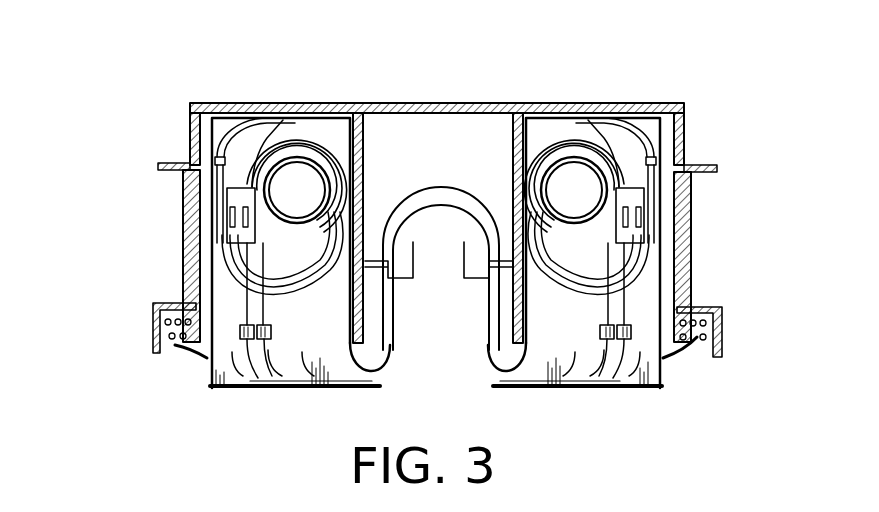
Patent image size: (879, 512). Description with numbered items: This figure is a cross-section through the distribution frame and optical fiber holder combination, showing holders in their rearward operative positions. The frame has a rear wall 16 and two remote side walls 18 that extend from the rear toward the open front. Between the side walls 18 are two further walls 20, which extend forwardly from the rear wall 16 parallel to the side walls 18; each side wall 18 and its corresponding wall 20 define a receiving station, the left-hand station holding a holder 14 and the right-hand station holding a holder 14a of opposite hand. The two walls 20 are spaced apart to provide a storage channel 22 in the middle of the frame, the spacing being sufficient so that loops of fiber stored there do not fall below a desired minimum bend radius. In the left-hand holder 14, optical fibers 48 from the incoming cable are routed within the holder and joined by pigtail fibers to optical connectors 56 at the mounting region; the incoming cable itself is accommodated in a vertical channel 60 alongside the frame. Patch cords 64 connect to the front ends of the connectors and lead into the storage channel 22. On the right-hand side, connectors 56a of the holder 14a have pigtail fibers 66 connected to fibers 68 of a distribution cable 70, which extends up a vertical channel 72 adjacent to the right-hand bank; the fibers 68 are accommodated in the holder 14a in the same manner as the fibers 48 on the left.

The holder 14 is at (322, 390).
The holder 14a is at (515, 395).
The rear wall 16 is at (405, 103).
The side wall 18 is at (190, 125).
The wall 20 is at (365, 130).
The storage channel 22 is at (460, 244).
The optical fibers 48 is at (258, 152).
The optical connectors 56 is at (270, 330).
The connectors 56a is at (598, 340).
The vertical channel 60 is at (153, 310).
The patch cords 64 is at (478, 340).
The pigtail fibers 66 is at (598, 328).
The fibers 68 is at (560, 125).
The distribution cable 70 is at (705, 340).
The vertical channel 72 is at (722, 322).